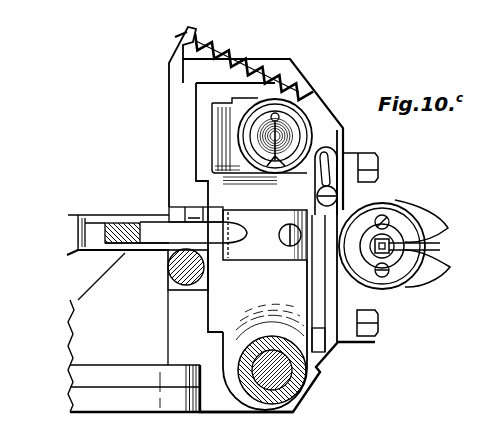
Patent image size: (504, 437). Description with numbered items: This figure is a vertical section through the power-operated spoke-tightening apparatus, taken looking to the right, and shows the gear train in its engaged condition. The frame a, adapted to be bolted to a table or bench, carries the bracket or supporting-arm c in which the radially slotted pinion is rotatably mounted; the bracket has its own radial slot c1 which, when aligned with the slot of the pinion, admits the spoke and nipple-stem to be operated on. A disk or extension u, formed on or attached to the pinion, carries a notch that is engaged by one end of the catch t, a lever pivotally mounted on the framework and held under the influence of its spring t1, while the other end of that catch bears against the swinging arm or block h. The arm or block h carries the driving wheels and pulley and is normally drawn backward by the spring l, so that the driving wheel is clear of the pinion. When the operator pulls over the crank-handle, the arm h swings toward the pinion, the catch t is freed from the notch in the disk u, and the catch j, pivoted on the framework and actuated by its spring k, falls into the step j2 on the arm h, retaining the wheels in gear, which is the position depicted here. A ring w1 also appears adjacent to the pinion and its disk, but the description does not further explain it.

The spring l is at (272, 58).
The catch t is at (321, 160).
The spring t1 is at (313, 292).
The bracket or supporting-arm c is at (404, 244).
The radial slot c1 is at (440, 246).
The disk or extension u is at (377, 246).
The ring w1 is at (379, 255).
The swinging arm or block h is at (265, 335).
The frame a is at (180, 356).
The catch j is at (148, 232).
The step j2 is at (233, 215).
The spring k is at (98, 228).